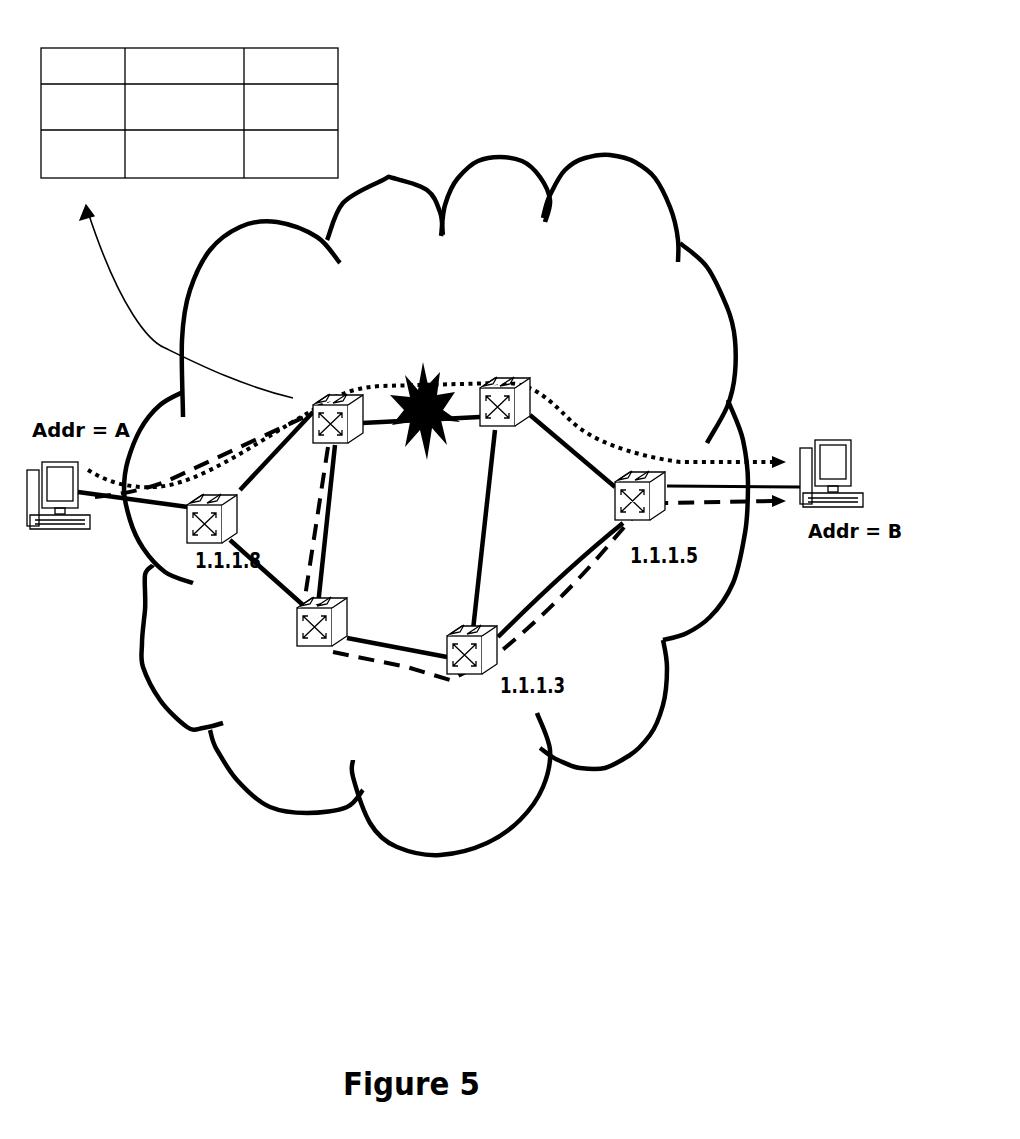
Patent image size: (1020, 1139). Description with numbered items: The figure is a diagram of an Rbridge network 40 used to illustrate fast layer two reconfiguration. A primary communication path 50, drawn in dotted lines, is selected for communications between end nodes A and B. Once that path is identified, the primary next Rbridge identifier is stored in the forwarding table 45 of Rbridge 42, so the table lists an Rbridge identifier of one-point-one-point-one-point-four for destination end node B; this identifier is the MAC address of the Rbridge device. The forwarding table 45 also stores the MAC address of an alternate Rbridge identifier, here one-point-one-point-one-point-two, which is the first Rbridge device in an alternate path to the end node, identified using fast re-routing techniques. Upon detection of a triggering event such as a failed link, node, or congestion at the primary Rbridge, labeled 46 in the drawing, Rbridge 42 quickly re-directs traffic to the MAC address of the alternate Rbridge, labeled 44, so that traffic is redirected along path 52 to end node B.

The Rbridge network 40 is at (622, 153).
The forwarding table 45 is at (172, 52).
The Rbridge 42 is at (349, 444).
The alternate rBridge 1.1.1.2 44 is at (325, 598).
The primary rBridge 1.1.1.4 46 is at (528, 368).
The primary communication path 50 is at (575, 409).
The path 52 is at (530, 630).